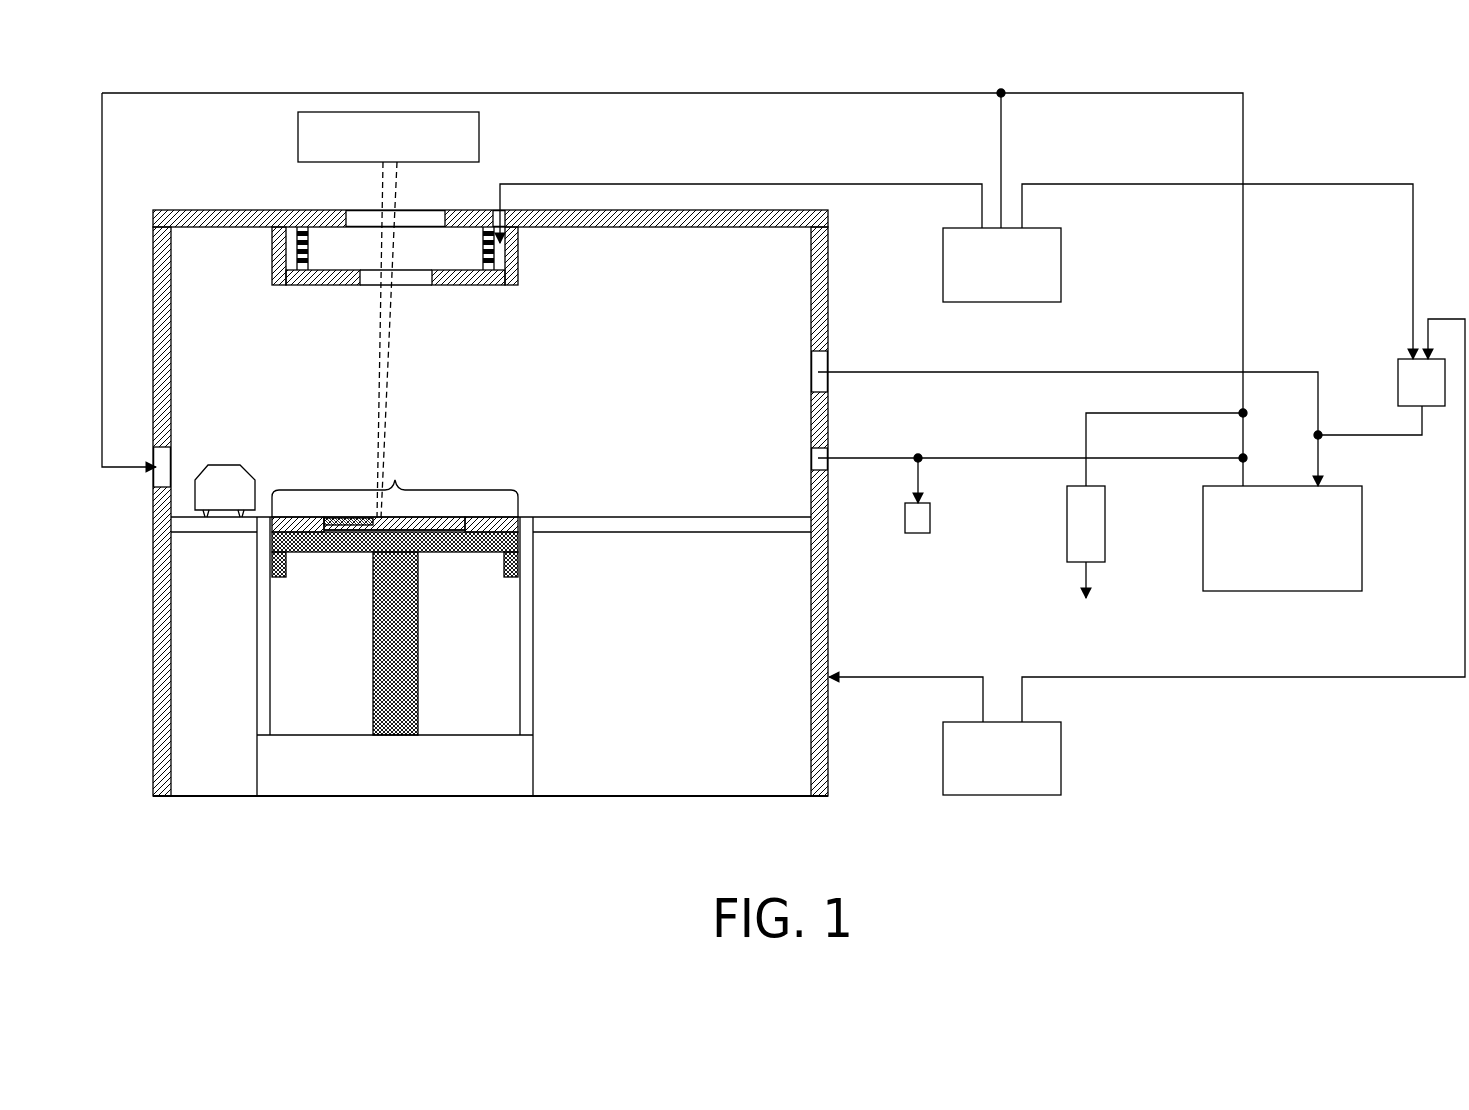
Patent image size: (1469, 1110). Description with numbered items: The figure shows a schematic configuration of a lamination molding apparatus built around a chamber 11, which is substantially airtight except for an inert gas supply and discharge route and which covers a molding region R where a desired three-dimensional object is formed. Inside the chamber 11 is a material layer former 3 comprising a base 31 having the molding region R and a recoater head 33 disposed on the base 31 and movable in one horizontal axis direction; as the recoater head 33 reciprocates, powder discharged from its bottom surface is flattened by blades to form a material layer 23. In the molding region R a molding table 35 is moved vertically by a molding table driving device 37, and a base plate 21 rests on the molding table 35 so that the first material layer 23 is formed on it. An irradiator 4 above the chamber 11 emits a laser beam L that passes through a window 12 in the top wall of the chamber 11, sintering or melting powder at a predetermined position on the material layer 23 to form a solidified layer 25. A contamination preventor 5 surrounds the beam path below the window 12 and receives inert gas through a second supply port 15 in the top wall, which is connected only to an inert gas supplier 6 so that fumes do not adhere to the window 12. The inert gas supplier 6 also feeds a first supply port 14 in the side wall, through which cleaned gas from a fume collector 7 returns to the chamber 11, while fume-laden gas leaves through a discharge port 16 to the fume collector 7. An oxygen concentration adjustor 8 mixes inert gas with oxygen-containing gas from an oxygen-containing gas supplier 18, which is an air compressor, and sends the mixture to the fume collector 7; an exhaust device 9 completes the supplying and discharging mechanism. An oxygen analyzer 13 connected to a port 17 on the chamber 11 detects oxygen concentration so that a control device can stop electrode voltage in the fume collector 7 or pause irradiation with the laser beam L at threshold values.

The material layer former 3 is at (710, 444).
The irradiator 4 is at (475, 130).
The contamination preventor 5 is at (465, 286).
The inert gas supplier 6 is at (1053, 238).
The fume collector 7 is at (1360, 503).
The oxygen concentration adjustor 8 is at (1403, 370).
The exhaust device 9 is at (1100, 500).
The chamber 11 is at (817, 270).
The window 12 is at (357, 215).
The oxygen analyzer 13 is at (930, 511).
The first supply port 14 is at (172, 449).
The second supply port 15 is at (503, 213).
The discharge port 16 is at (817, 357).
The port 17 is at (815, 452).
The oxygen-containing gas supplier 18 is at (1055, 740).
The base plate 21 is at (450, 535).
The material layer 23 is at (430, 520).
The solidified layer 25 is at (345, 518).
The base 31 is at (627, 522).
The recoater head 33 is at (240, 478).
The molding table 35 is at (342, 553).
The molding table driving device 37 is at (412, 620).
The laser beam L is at (387, 346).
The molding region R is at (395, 482).